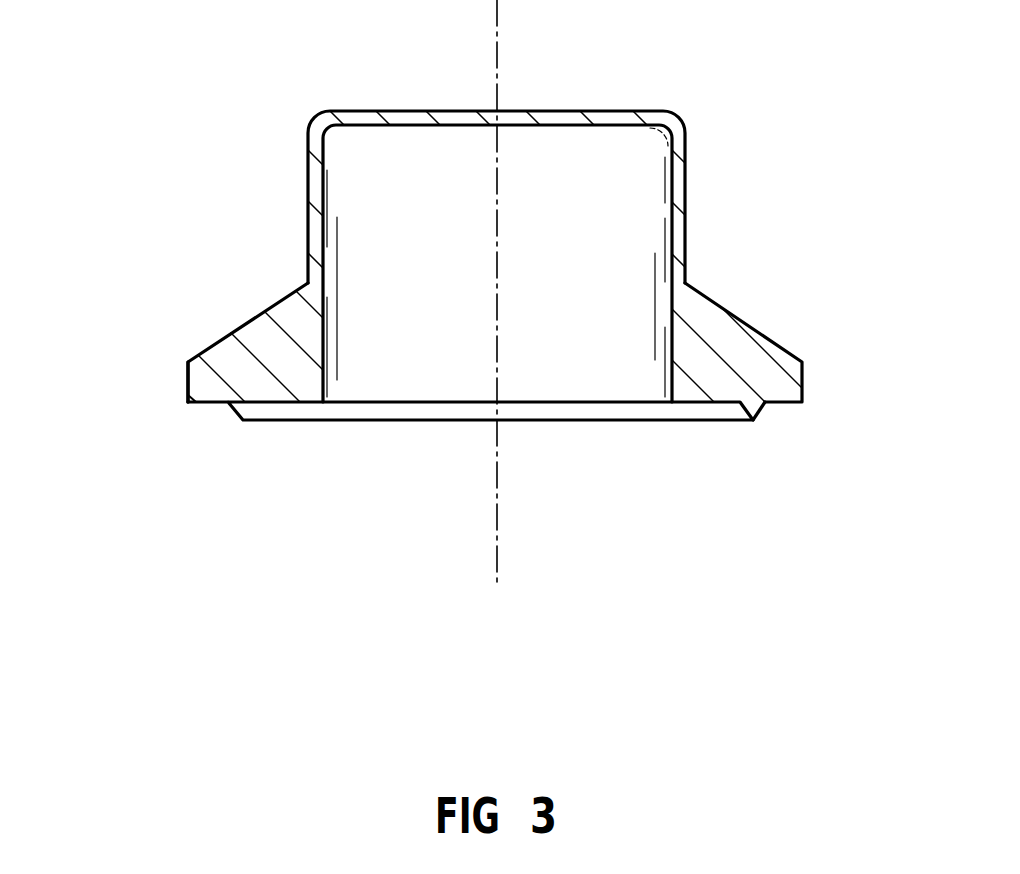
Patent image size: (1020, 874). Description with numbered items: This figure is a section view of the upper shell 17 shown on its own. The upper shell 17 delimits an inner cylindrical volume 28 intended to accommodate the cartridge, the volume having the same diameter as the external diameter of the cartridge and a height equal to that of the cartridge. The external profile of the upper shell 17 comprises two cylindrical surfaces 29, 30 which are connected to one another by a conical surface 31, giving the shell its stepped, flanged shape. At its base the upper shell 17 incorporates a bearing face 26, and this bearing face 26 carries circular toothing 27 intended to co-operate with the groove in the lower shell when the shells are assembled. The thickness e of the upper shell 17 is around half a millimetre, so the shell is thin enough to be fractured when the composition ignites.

The upper shell 17 is at (707, 242).
The inner cylindrical volume 28 is at (410, 192).
The cylindrical surface 29 is at (308, 233).
The conical surface 31 is at (245, 324).
The cylindrical surface 30 is at (187, 383).
The bearing face 26 is at (211, 405).
The circular toothing 27 is at (753, 420).
The thickness e is at (603, 149).